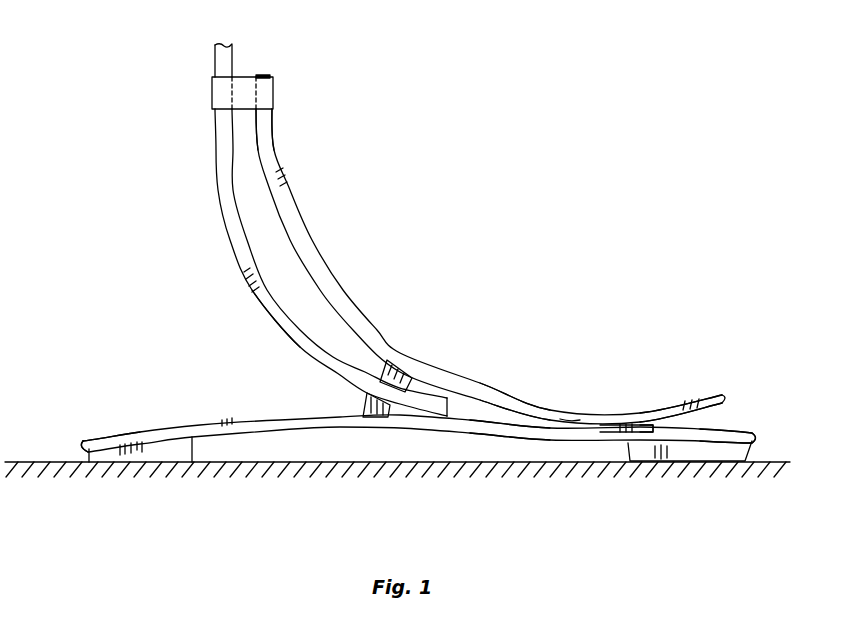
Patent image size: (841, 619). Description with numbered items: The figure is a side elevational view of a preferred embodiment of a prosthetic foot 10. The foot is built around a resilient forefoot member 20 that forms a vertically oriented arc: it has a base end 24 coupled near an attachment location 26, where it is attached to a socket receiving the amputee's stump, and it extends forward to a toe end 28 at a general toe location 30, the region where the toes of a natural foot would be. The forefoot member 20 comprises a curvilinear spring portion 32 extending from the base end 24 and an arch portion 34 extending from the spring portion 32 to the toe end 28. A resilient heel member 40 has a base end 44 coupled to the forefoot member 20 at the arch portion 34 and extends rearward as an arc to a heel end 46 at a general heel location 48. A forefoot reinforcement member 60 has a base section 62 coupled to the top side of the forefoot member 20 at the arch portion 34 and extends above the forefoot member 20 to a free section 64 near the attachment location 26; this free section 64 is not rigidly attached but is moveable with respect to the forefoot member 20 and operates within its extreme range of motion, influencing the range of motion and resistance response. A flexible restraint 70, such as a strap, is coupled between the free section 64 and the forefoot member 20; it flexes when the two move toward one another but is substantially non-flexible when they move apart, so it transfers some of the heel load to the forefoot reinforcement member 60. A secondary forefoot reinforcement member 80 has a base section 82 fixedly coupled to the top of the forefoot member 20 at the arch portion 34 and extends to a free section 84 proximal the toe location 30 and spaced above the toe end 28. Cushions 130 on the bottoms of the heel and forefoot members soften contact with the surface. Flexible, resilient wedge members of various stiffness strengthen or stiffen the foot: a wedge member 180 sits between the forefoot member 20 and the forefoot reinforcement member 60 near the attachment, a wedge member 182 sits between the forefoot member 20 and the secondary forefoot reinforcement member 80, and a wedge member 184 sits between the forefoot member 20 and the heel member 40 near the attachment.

The prosthetic foot 10 is at (99, 292).
The forefoot member 20 is at (233, 266).
The base end 24 is at (213, 65).
The attachment location 26 is at (233, 47).
The toe end 28 is at (721, 431).
The toe location 30 is at (757, 428).
The spring portion 32 is at (267, 324).
The arch portion 34 is at (446, 407).
The heel member 40 is at (282, 417).
The base end 44 is at (500, 432).
The heel end 46 is at (98, 440).
The heel location 48 is at (84, 442).
The forefoot reinforcement member 60 is at (327, 263).
The base section 62 is at (494, 396).
The free section 64 is at (268, 122).
The flexible restraint 70 is at (274, 87).
The secondary forefoot reinforcement member 80 is at (627, 424).
The base section 82 is at (581, 412).
The free section 84 is at (693, 395).
The cushions 130 is at (692, 450).
The wedge member 180 is at (398, 372).
The wedge member 182 is at (655, 424).
The wedge member 184 is at (368, 420).